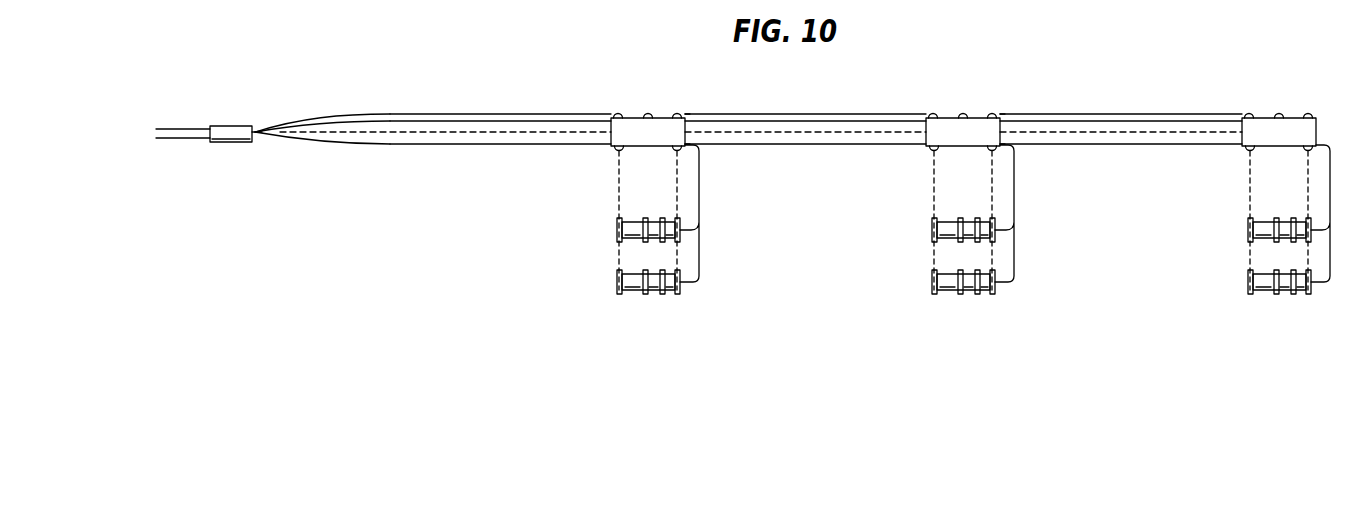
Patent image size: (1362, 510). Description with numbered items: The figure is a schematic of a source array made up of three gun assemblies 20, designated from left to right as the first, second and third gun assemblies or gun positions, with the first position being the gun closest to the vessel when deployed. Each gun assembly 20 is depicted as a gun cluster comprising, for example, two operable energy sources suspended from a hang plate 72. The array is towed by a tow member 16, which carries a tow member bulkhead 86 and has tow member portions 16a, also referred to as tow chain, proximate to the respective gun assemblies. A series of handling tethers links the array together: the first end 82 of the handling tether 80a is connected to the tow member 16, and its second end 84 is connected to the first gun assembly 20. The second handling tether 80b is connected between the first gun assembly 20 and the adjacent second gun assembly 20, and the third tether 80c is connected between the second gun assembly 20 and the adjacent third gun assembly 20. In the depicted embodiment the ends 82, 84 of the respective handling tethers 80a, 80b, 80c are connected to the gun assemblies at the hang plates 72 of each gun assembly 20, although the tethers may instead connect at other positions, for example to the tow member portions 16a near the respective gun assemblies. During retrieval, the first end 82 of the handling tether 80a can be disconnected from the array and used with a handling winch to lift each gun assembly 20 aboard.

The tow member 16 is at (179, 128).
The tow member portion 16a is at (462, 135).
The tow member bulkhead 86 is at (231, 127).
The first end 82 is at (258, 128).
The handling tether 80a is at (445, 114).
The second handling tether 80b is at (801, 113).
The third tether 80c is at (1143, 114).
The second end 84 is at (611, 113).
The hang plate 72 is at (643, 137).
The gun assembly 20 is at (617, 230).